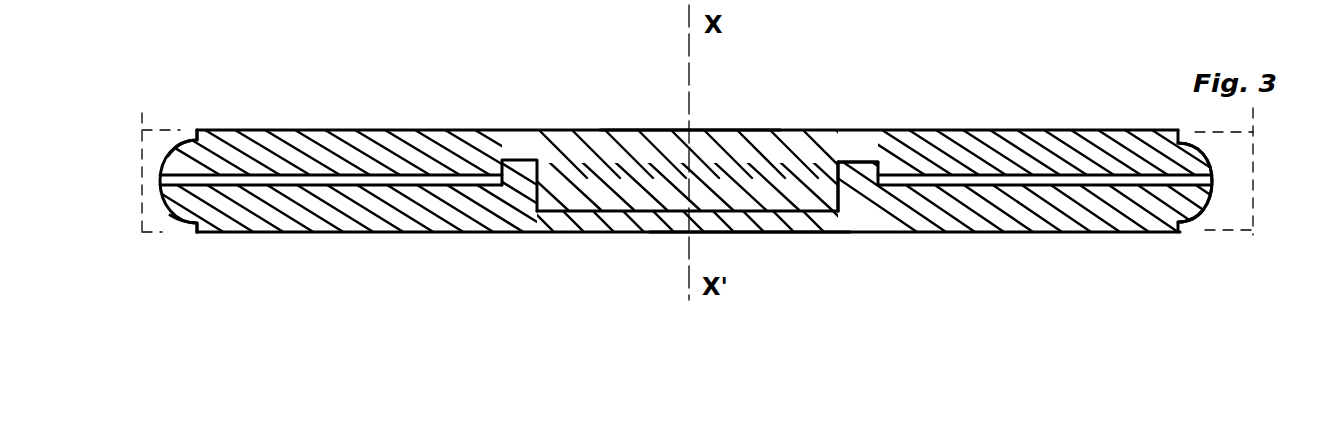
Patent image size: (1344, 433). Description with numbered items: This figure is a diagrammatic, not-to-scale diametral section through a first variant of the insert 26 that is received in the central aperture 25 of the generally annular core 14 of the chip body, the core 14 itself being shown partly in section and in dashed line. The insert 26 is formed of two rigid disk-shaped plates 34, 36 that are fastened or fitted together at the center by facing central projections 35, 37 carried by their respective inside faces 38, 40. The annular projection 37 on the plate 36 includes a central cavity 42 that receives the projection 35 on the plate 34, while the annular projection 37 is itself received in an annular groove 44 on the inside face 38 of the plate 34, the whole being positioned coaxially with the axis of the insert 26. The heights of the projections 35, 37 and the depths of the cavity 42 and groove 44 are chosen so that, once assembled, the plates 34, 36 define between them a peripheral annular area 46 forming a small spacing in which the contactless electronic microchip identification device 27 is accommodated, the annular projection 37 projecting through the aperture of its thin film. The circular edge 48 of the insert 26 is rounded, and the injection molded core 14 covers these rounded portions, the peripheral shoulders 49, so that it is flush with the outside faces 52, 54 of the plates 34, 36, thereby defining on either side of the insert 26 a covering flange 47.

The core 14 is at (156, 134).
The central aperture 25 is at (200, 158).
The insert 26 is at (914, 90).
The contactless electronic microchip identification device 27 is at (368, 188).
The plate 34 is at (1042, 124).
The central projection 35 is at (612, 204).
The plate 36 is at (1083, 242).
The annular projection 37 is at (866, 178).
The inside face 38 is at (994, 181).
The inside face 40 is at (1036, 184).
The central cavity 42 is at (548, 222).
The annular groove 44 is at (858, 170).
The peripheral annular area 46 is at (165, 181).
The covering flange 47 is at (172, 232).
The circular edge 48 is at (1222, 170).
The peripheral shoulders 49 is at (180, 142).
The outside face 52 is at (712, 126).
The outside face 54 is at (782, 234).